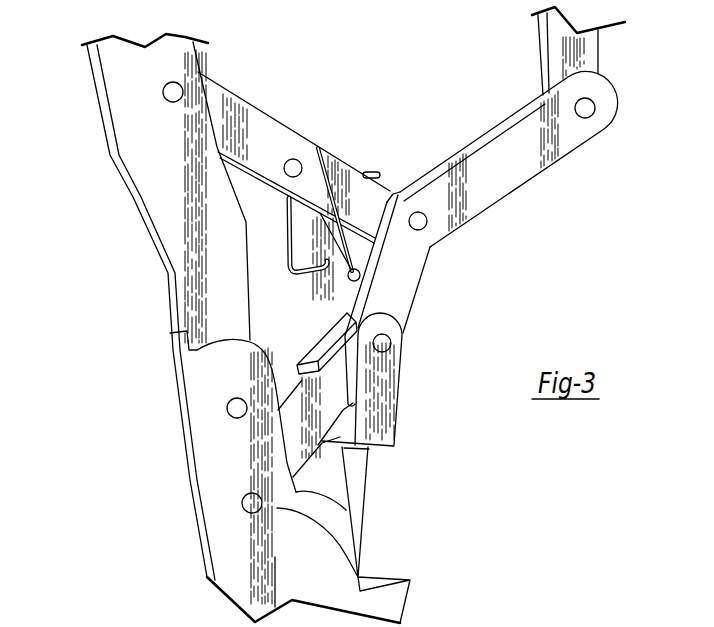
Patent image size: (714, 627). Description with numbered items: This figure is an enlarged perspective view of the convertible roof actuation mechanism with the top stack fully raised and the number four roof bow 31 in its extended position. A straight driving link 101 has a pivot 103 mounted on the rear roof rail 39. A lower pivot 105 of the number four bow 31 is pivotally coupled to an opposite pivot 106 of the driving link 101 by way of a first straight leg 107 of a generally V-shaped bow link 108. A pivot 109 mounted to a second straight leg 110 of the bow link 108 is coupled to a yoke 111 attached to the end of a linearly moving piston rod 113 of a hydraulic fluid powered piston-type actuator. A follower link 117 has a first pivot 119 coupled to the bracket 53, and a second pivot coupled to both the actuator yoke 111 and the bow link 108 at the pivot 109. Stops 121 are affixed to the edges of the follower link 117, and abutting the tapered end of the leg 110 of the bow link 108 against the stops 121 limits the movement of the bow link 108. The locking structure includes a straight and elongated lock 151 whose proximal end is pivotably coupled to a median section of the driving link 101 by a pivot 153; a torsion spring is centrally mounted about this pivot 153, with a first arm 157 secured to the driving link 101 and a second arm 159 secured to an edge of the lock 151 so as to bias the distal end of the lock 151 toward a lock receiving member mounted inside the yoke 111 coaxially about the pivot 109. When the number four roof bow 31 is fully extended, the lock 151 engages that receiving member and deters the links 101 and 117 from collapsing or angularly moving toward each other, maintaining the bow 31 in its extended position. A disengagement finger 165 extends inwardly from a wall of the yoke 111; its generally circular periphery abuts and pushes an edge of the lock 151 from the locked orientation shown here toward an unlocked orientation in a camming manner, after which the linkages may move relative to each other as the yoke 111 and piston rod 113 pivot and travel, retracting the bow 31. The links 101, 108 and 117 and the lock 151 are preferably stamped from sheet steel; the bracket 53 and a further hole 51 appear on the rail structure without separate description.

The number four roof bow 31 is at (590, 53).
The rear roof rail 39 is at (170, 200).
The mounting hole 51 is at (237, 408).
The bracket 53 is at (240, 555).
The driving link 101 is at (248, 133).
The pivot 103 is at (198, 72).
The lower pivot 105 is at (585, 108).
The opposite pivot 106 is at (418, 221).
The first straight leg 107 is at (507, 153).
The bow link 108 is at (425, 265).
The pivot 109 is at (382, 343).
The second straight leg 110 is at (395, 288).
The yoke 111 is at (377, 413).
The piston rod 113 is at (355, 482).
The follower link 117 is at (297, 432).
The first pivot 119 is at (410, 584).
The stops 121 is at (323, 340).
The lock 151 is at (333, 297).
The pivot 153 is at (293, 168).
The first arm 157 is at (380, 174).
The second arm 159 is at (295, 257).
The disengagement finger 165 is at (333, 193).